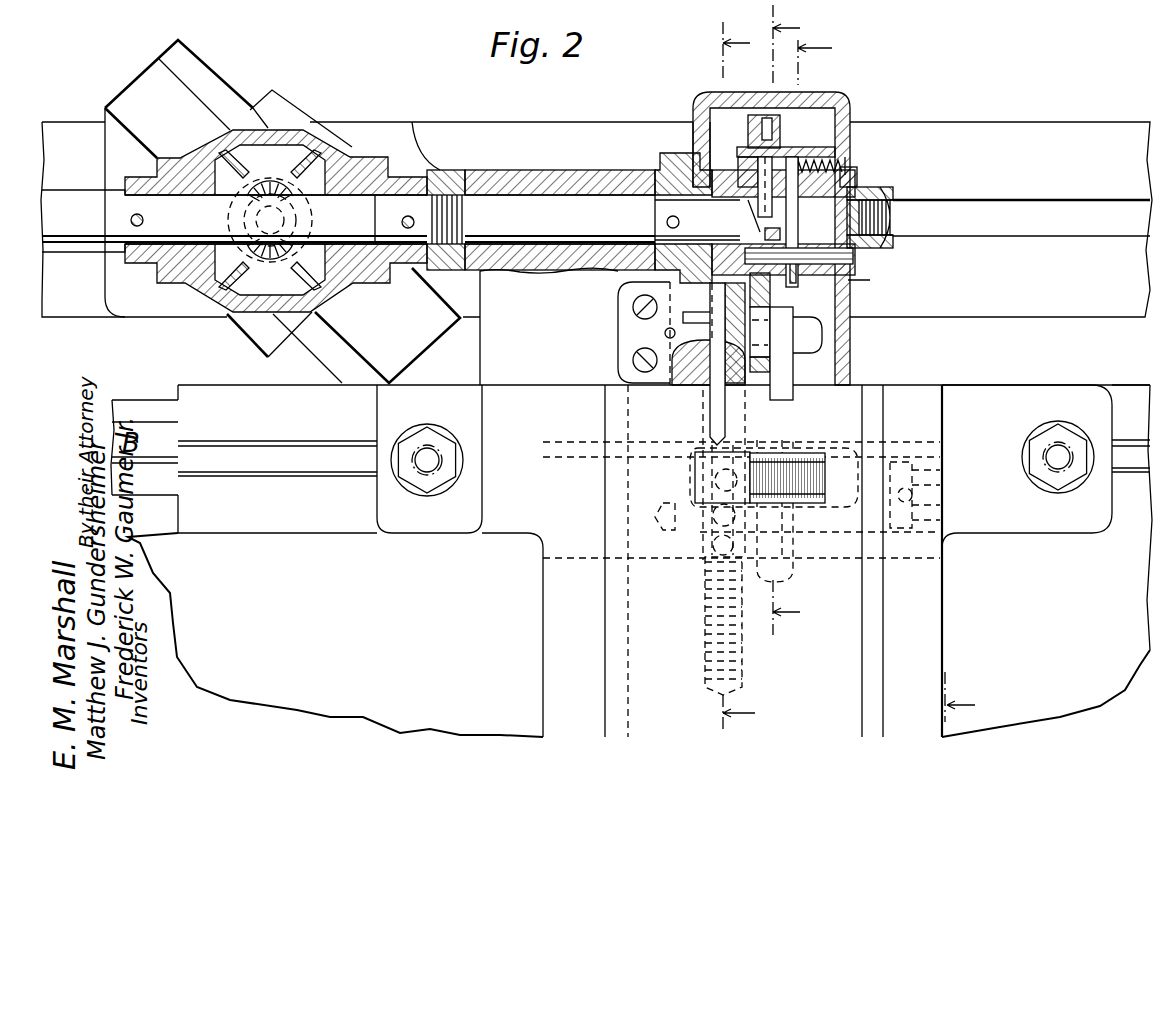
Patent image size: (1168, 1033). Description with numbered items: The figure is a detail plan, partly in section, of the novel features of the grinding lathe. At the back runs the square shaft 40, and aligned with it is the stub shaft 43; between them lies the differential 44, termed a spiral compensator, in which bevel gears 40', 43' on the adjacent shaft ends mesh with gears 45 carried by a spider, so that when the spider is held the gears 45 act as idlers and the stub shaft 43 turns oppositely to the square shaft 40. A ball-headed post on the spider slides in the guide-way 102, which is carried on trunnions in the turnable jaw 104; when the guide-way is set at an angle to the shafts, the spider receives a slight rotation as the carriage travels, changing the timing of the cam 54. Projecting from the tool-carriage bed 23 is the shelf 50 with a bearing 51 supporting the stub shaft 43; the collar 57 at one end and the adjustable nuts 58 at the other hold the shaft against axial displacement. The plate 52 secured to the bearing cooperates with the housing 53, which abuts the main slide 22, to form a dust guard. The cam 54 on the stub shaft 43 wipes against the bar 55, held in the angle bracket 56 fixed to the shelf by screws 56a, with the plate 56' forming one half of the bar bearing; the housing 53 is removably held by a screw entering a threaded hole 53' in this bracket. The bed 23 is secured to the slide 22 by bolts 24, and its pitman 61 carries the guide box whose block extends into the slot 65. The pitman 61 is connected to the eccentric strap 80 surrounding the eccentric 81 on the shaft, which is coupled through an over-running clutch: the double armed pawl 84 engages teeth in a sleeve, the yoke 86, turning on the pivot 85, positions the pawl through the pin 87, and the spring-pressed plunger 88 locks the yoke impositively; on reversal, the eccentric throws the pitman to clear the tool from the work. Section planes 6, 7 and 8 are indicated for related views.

The guide-way 102 is at (130, 90).
The turnable bracket or jaw 104 is at (283, 102).
The differential 44 is at (359, 141).
The gears 45 is at (264, 190).
The square shaft 40 is at (234, 221).
The bevel gear 40' is at (257, 323).
The bevel gear 43' is at (366, 325).
The adjustable nuts 58 is at (460, 172).
The bearing 51 is at (570, 170).
The stub shaft 43 is at (560, 219).
The collar 57 is at (663, 187).
The cam 54 is at (733, 190).
The plate 52 is at (697, 139).
The housing member 53 is at (788, 231).
The eccentric strap 80 is at (773, 113).
The eccentric 81 is at (765, 157).
The double armed pawl 84 is at (768, 173).
The spring-pressed plunger 88 is at (847, 150).
The pin 87 is at (780, 190).
The yoke 86 is at (795, 222).
The yoke pivot 85 is at (847, 258).
The bar-supporting angle bracket 56 is at (644, 336).
The screws 56a is at (633, 355).
The hole 53' is at (651, 333).
The plate 56' is at (711, 332).
The shelf or bracket 50 is at (540, 326).
The bar 55 is at (707, 400).
The pitman 61 is at (787, 410).
The transversely extending slot 65 is at (813, 503).
The main slide or carriage 22 is at (244, 466).
The tool-carriage bed 23 is at (977, 543).
The bolts 24 is at (1058, 462).
The section line 6 is at (895, 375).
The section line 7 is at (789, 318).
The section line 8 is at (739, 375).